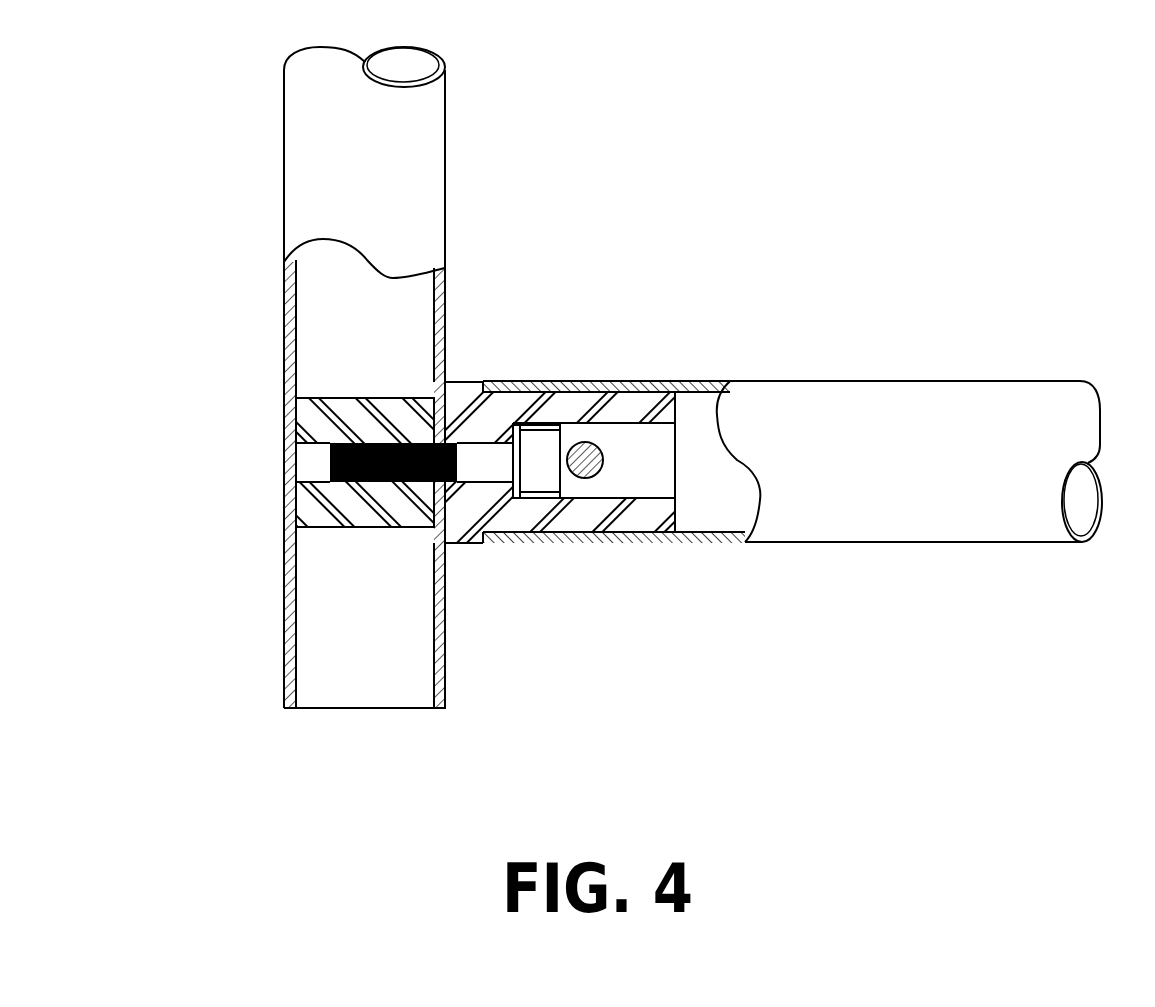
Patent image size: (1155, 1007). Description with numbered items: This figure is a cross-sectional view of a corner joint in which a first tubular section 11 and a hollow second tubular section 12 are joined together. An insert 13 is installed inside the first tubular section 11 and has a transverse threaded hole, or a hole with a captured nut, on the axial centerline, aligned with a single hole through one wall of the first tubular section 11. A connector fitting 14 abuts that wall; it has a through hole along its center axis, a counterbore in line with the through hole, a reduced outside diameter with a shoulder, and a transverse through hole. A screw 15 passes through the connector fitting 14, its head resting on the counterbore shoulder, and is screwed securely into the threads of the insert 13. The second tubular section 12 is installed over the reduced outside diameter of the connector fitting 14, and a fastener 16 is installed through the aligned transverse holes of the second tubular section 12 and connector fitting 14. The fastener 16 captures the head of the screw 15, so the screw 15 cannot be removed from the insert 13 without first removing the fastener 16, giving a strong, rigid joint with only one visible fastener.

The first tubular section 11 is at (297, 205).
The second tubular section 12 is at (916, 392).
The insert 13 is at (290, 402).
The connector fitting 14 is at (465, 422).
The screw 15 is at (484, 470).
The fastener 16 is at (587, 473).